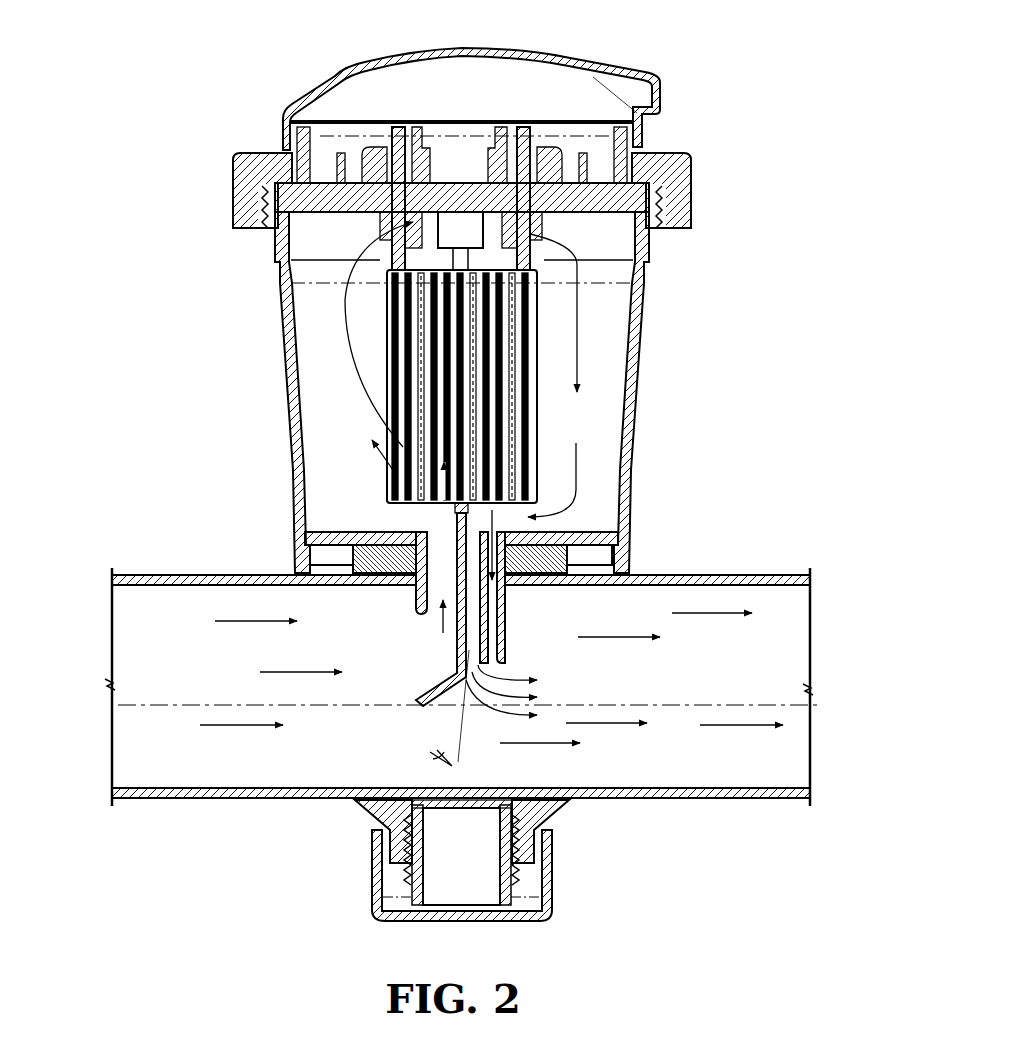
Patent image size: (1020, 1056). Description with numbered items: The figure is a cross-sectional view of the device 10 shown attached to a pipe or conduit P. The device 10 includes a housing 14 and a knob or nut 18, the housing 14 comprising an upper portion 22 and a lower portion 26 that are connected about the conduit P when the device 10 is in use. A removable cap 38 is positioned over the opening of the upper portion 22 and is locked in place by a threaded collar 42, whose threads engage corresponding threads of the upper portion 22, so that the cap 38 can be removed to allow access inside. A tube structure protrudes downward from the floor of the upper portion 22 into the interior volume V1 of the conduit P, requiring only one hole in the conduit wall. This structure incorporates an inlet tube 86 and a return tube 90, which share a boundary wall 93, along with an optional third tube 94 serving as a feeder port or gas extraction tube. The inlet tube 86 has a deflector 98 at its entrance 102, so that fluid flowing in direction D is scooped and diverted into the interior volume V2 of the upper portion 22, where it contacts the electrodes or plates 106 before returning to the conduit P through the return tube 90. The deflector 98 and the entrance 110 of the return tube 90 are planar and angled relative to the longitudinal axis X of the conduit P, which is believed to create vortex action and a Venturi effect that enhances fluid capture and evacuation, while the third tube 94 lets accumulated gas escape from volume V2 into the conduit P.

The device 10 is at (505, 446).
The housing 14 is at (476, 505).
The knob or nut 18 is at (540, 908).
The upper portion 22 is at (287, 382).
The lower portion 26 is at (373, 808).
The cap 38 is at (567, 62).
The collar 42 is at (688, 205).
The inlet tube 86 is at (424, 545).
The return tube 90 is at (585, 568).
The wall 93 is at (457, 588).
The third tube 94 is at (500, 593).
The deflector 98 is at (418, 702).
The entrance 102 is at (440, 655).
The electrodes or plates 106 is at (526, 326).
The entrance 110 is at (498, 690).
The pipe or conduit P is at (155, 800).
The direction D is at (108, 677).
The longitudinal axis X is at (456, 707).
The interior volume V1 is at (740, 665).
The interior volume V2 is at (330, 431).